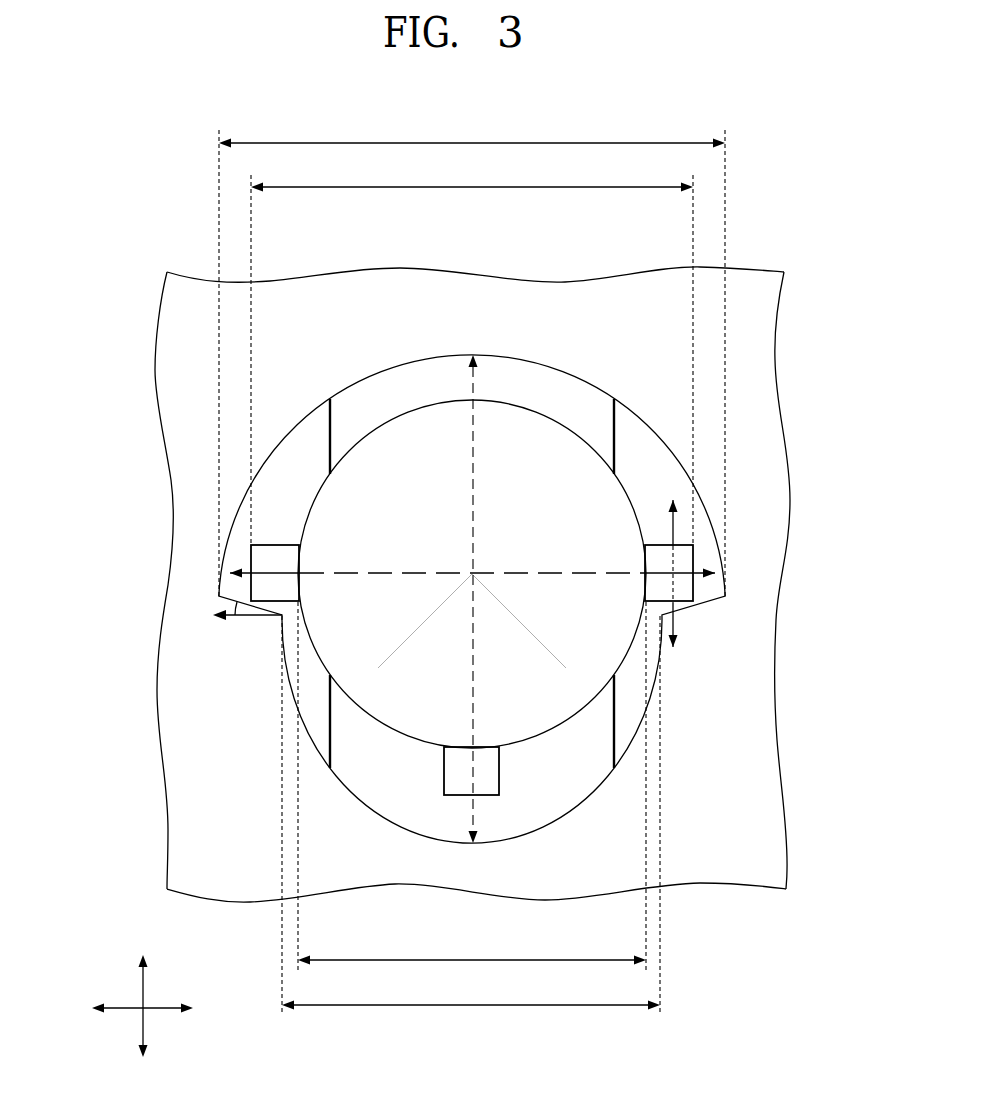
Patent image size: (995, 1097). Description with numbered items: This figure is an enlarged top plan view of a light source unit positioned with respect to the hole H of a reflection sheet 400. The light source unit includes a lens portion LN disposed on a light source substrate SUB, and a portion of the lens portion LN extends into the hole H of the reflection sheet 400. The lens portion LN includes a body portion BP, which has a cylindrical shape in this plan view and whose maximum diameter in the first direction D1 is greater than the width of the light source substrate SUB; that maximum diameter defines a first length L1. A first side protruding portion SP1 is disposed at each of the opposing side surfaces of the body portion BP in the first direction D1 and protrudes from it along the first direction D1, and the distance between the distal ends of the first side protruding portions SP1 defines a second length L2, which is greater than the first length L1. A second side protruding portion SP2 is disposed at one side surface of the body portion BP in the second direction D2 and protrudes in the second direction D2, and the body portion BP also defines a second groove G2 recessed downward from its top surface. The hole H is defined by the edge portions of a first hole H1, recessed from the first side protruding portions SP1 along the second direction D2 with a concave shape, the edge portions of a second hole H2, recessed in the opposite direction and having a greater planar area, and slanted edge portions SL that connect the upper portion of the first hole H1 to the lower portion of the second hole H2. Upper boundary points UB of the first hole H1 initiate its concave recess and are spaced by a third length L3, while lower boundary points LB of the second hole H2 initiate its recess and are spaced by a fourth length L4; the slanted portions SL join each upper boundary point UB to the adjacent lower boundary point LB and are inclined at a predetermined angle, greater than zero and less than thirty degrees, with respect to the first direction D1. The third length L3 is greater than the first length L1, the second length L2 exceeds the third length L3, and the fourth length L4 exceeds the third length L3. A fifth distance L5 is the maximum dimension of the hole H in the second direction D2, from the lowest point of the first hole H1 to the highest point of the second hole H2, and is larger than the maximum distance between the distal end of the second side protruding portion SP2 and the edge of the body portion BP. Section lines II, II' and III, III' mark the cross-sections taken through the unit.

The light source substrate SUB is at (342, 733).
The reflection sheet 400 is at (763, 718).
The hole H is at (637, 447).
The first hole H1 is at (412, 829).
The second hole H2 is at (448, 355).
The lens portion LN is at (508, 428).
The body portion BP is at (562, 725).
The first side protruding portion SP1 is at (280, 560).
The second side protruding portion SP2 is at (490, 770).
The second groove G2 is at (410, 697).
The slanted edge portion SL is at (707, 603).
The lower boundary point LB is at (727, 597).
The upper boundary point UB is at (667, 618).
The first length L1 is at (472, 795).
The second length L2 is at (472, 355).
The third length L3 is at (471, 824).
The fourth length L4 is at (472, 358).
The fifth distance L5 is at (485, 599).
The section line II is at (436, 565).
The section line II' is at (680, 564).
The section line III is at (671, 640).
The section line III' is at (671, 541).
The first direction D1 is at (157, 1009).
The second direction D2 is at (142, 1020).